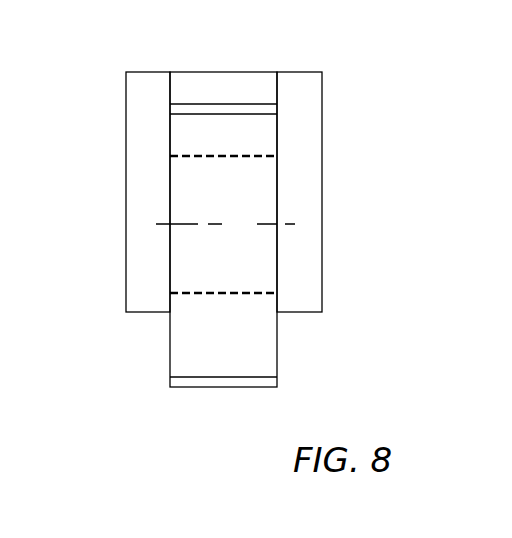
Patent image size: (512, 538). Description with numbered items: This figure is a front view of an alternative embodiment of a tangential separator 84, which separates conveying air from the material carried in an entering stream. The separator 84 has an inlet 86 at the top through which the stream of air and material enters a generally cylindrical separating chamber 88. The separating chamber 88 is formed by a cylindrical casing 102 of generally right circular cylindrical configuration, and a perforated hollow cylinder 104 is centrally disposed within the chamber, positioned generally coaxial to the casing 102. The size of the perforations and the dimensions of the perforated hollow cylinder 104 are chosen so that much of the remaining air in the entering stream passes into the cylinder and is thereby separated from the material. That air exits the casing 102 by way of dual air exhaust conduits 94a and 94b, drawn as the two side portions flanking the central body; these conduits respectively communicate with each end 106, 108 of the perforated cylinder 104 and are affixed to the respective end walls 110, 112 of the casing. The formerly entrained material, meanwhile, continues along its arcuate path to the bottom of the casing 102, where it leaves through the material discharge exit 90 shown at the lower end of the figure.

The tangential separator 84 is at (238, 36).
The inlet 86 is at (227, 90).
The separating chamber 88 is at (252, 137).
The material discharge exit 90 is at (217, 377).
The air exhaust conduit 94a is at (138, 126).
The air exhaust conduit 94b is at (312, 193).
The cylindrical casing 102 is at (257, 353).
The perforated hollow cylinder 104 is at (198, 296).
The end of the perforated cylinder 106 is at (170, 257).
The end of the perforated cylinder 108 is at (278, 265).
The end wall 110 is at (170, 358).
The end wall 112 is at (278, 332).